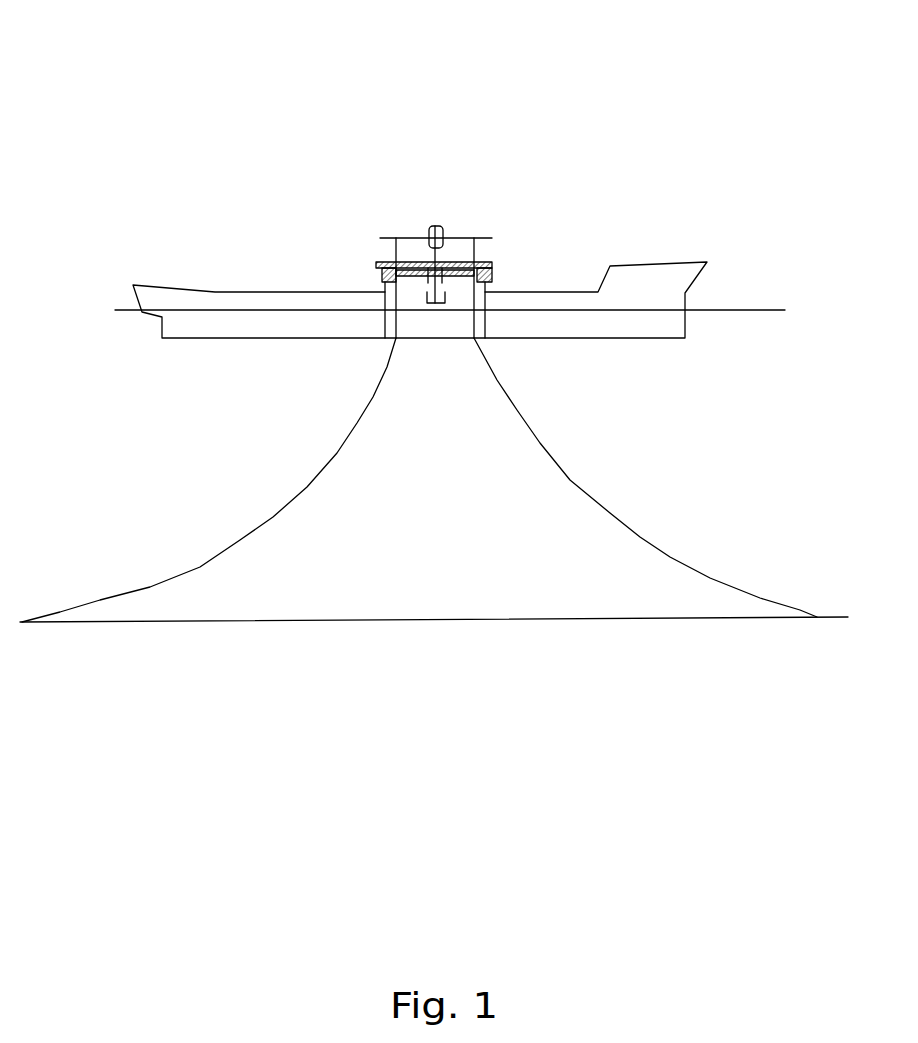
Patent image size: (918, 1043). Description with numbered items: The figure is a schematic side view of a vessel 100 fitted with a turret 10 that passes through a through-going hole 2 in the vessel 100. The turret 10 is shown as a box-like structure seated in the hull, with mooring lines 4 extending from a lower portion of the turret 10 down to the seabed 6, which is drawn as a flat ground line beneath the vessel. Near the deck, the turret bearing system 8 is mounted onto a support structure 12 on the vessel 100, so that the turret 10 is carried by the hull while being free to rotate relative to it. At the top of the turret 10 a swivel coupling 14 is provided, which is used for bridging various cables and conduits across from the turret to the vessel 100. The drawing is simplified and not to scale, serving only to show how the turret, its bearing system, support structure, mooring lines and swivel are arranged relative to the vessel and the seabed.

The vessel 100 is at (280, 217).
The through-going hole 2 is at (388, 331).
The mooring lines 4 is at (640, 537).
The seabed 6 is at (427, 645).
The turret bearing system 8 is at (357, 207).
The turret 10 is at (513, 190).
The support structure 12 is at (493, 267).
The swivel coupling 14 is at (437, 227).